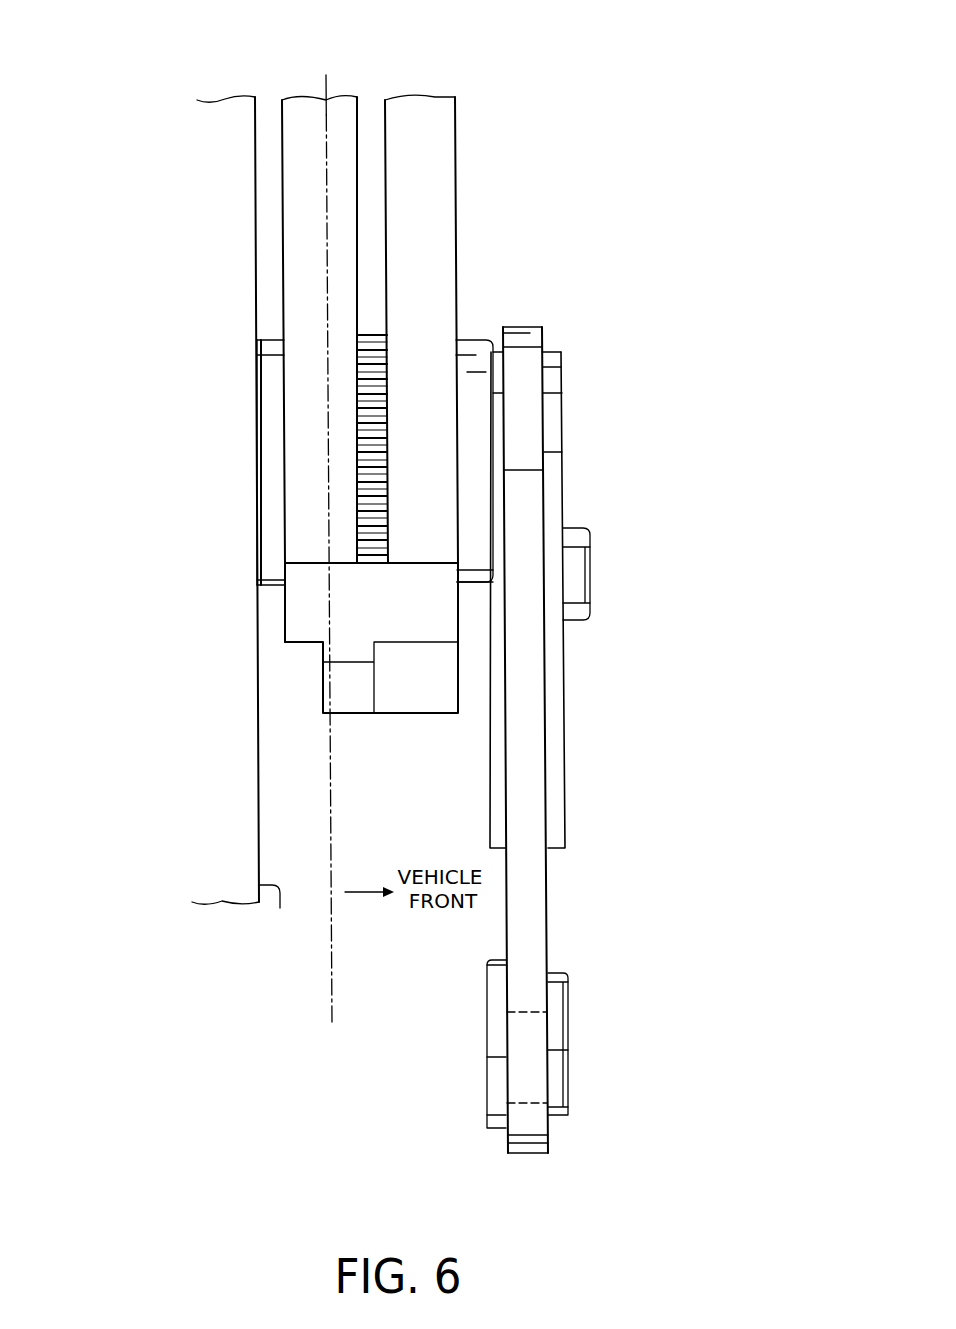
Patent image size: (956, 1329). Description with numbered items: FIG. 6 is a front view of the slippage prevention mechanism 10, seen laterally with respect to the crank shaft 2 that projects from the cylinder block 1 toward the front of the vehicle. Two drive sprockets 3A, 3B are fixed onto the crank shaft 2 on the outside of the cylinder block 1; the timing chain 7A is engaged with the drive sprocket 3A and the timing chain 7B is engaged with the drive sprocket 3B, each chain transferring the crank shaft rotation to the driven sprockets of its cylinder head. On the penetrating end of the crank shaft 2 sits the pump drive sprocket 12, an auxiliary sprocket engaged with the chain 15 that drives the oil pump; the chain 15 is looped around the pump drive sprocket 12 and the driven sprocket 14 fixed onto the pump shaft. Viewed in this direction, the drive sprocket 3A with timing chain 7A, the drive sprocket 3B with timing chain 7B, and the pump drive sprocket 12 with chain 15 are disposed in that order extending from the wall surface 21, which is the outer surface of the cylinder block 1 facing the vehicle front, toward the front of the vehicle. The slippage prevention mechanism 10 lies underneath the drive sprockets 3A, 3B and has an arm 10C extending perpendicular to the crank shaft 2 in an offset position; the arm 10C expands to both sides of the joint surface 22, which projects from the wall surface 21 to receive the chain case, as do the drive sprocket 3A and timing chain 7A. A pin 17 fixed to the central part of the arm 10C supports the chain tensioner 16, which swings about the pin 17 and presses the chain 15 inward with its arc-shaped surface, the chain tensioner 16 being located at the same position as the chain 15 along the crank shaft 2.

The cylinder block 1 is at (214, 88).
The crank shaft 2 is at (262, 368).
The drive sprocket 3A is at (305, 440).
The drive sprocket 3B is at (427, 393).
The timing chain 7A is at (340, 115).
The timing chain 7B is at (428, 115).
The slippage prevention mechanism 10 is at (403, 736).
The arm 10C is at (305, 613).
The pump drive sprocket 12 is at (552, 396).
The driven sprocket 14 is at (567, 1000).
The chain 15 is at (523, 885).
The chain tensioner 16 is at (557, 757).
The pin 17 is at (578, 578).
The wall surface 21 is at (281, 908).
The joint surface 22 is at (333, 947).